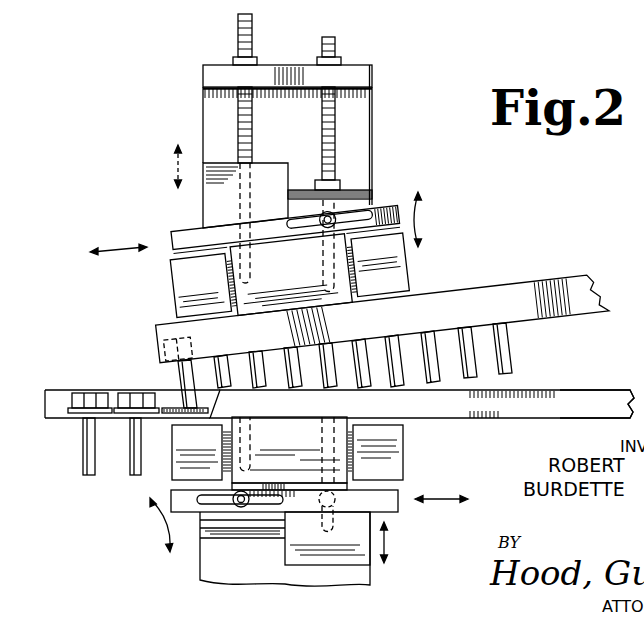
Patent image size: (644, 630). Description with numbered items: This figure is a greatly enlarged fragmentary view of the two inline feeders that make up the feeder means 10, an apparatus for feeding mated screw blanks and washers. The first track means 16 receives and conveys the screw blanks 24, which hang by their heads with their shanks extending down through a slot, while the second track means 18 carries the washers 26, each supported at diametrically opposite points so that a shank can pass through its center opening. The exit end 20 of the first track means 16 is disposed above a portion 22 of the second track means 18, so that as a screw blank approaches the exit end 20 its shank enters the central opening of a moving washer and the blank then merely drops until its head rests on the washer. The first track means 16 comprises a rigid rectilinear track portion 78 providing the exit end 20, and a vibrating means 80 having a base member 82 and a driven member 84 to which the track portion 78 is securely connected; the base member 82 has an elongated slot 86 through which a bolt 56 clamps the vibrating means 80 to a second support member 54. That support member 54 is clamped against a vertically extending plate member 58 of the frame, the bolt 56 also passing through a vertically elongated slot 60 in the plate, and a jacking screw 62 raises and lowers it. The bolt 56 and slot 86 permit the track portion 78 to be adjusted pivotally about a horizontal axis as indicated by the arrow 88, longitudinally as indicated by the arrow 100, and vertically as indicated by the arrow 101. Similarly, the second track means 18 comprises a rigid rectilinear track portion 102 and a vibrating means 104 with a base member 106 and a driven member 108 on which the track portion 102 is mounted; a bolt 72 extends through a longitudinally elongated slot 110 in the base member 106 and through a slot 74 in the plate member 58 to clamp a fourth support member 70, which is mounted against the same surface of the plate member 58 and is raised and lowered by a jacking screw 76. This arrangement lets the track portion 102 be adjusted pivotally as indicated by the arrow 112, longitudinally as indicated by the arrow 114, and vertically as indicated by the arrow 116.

The feeder means 10 is at (591, 236).
The first track means 16 is at (434, 271).
The second track means 18 is at (476, 433).
The exit end 20 is at (172, 322).
The portion 22 is at (316, 415).
The screw blanks 24 is at (470, 362).
The washers 26 is at (170, 409).
The second support member 54 is at (372, 198).
The bolt 56 is at (326, 216).
The plate member 58 is at (373, 150).
The slot 60 is at (348, 190).
The jacking screw 62 is at (337, 128).
The fourth support member 70 is at (218, 206).
The bolt 72 is at (248, 507).
The slot 74 is at (223, 517).
The jacking screw 76 is at (238, 118).
The track portion 78 is at (503, 293).
The vibrating means 80 is at (162, 220).
The base member 82 is at (396, 204).
The driven member 84 is at (305, 290).
The elongated slot 86 is at (300, 222).
The arrow 88 is at (422, 218).
The arrow 100 is at (128, 252).
The arrow 101 is at (386, 552).
The track portion 102 is at (578, 392).
The vibrating means 104 is at (410, 444).
The base member 106 is at (386, 502).
The driven member 108 is at (303, 441).
The elongated slot 110 is at (237, 502).
The arrow 112 is at (164, 540).
The arrow 114 is at (443, 500).
The arrow 116 is at (176, 165).